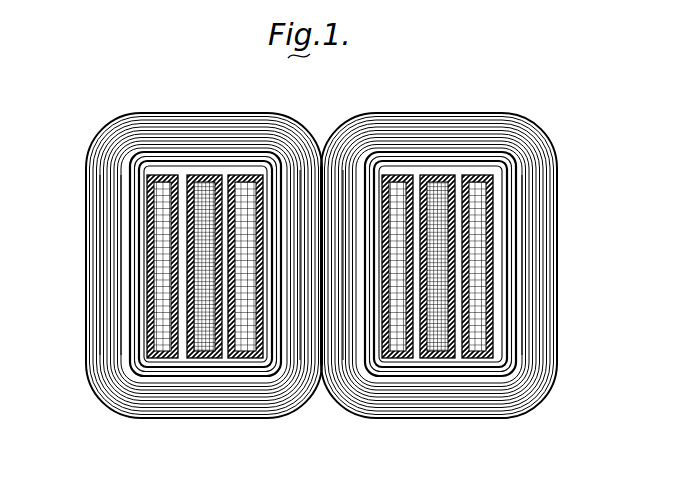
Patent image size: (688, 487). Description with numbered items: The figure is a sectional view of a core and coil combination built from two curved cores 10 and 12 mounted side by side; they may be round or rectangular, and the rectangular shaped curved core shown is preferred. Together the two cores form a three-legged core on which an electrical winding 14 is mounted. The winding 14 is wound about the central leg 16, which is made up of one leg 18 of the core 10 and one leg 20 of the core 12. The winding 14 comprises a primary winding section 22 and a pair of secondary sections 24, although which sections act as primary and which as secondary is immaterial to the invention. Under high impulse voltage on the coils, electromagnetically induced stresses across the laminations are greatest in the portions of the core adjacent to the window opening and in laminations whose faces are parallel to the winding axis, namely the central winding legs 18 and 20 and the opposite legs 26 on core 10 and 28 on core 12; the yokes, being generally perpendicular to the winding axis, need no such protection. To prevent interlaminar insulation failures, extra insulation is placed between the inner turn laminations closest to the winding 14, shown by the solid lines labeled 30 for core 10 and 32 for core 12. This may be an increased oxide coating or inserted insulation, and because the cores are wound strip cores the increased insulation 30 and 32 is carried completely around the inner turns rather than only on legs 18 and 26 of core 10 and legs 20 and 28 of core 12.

The curved core 10 is at (163, 128).
The curved core 12 is at (483, 128).
The electrical winding 14 is at (197, 363).
The central leg 16 is at (322, 190).
The leg of core 10 18 is at (300, 192).
The leg of core 12 20 is at (343, 187).
The primary winding section 22 is at (207, 340).
The secondary sections 24 is at (147, 356).
The opposite leg of core 10 26 is at (99, 334).
The opposite leg of core 12 28 is at (545, 300).
The increased insulation on core 10 30 is at (122, 265).
The increased insulation on core 12 32 is at (520, 253).